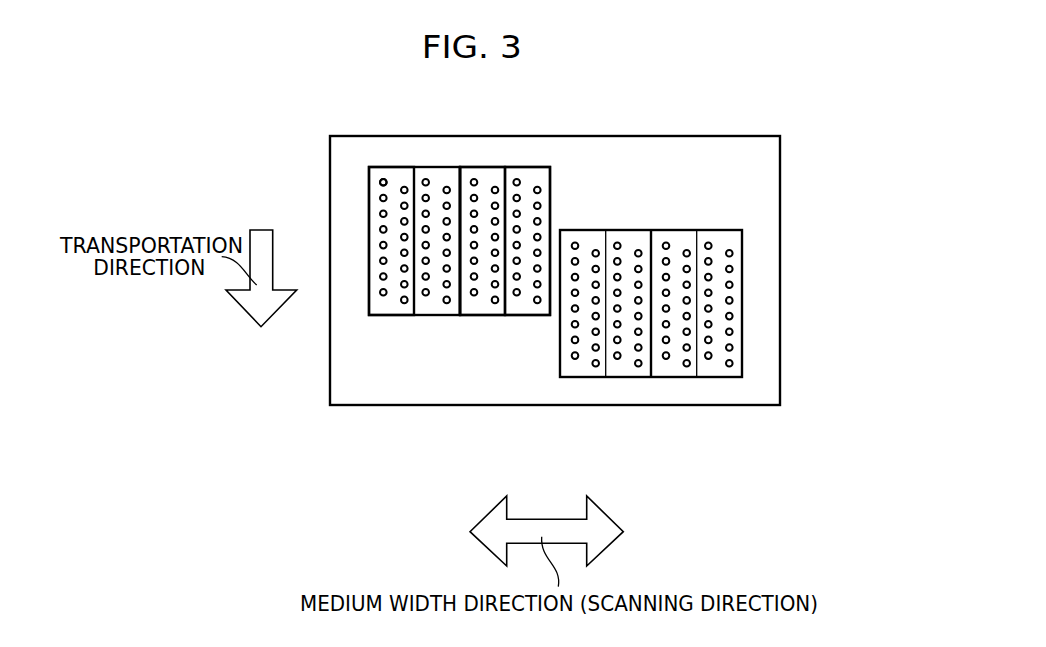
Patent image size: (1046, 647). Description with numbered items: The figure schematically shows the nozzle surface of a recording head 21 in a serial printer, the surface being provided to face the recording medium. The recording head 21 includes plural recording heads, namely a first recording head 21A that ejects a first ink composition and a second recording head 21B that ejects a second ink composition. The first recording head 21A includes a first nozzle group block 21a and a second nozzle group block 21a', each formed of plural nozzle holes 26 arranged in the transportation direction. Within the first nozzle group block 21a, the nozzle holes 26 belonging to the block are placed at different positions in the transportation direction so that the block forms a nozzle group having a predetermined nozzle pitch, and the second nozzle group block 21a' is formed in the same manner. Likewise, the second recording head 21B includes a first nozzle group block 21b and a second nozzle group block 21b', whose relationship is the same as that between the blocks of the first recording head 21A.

The recording head 21 is at (565, 135).
The first recording head 21A is at (453, 450).
The second recording head 21B is at (547, 450).
The first nozzle group block 21a is at (391, 308).
The second nozzle group block 21a' is at (437, 308).
The first nozzle group block 21b is at (482, 308).
The second nozzle group block 21b' is at (527, 308).
The nozzle hole 26 is at (382, 178).